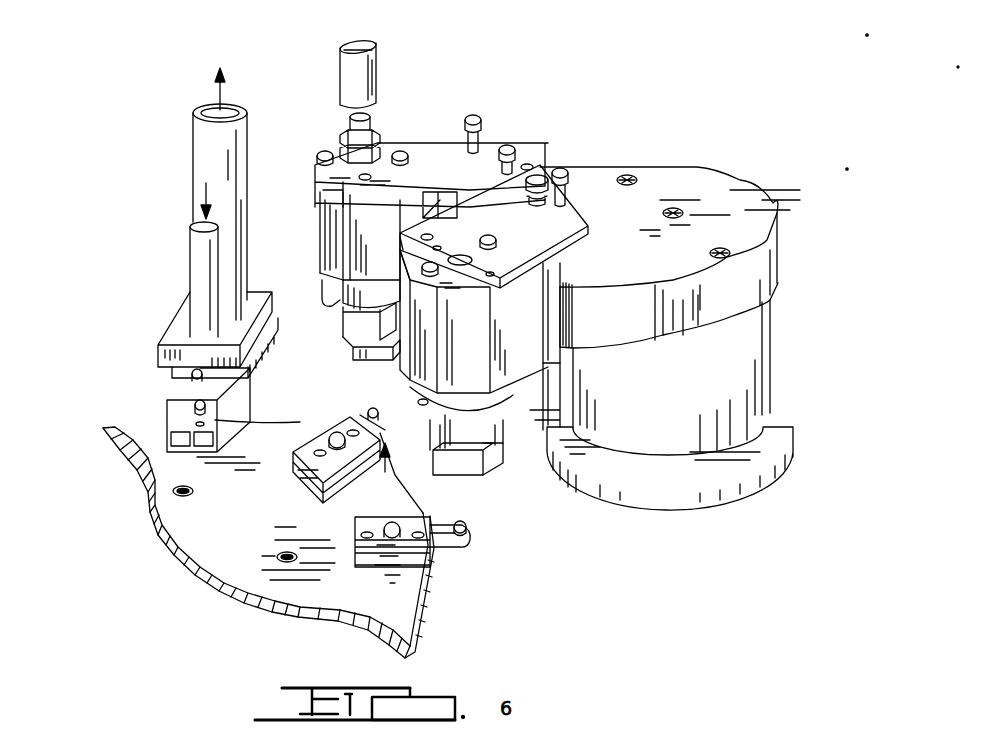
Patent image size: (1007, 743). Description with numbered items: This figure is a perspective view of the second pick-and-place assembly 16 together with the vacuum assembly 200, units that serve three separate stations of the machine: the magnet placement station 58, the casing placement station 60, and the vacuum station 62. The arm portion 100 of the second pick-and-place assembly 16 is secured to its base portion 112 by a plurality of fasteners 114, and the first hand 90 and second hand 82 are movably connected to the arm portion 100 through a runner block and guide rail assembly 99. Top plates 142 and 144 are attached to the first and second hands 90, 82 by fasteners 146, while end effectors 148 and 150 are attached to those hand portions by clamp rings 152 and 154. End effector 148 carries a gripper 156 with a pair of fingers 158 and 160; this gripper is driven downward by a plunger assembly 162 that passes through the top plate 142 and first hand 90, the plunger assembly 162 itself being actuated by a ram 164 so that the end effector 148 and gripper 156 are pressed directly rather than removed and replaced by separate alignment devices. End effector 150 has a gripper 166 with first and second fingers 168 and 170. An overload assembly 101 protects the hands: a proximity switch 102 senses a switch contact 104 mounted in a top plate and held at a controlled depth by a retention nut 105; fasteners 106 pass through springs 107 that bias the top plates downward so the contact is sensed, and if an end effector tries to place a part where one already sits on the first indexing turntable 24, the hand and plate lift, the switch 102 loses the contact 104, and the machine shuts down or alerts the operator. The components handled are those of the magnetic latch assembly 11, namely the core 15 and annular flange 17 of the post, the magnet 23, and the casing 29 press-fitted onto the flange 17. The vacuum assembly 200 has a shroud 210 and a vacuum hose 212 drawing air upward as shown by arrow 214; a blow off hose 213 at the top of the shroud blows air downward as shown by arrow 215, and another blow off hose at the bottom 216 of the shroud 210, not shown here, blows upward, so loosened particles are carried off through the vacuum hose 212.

The magnetic latch assembly 11 is at (176, 378).
The core 15 is at (467, 520).
The second pick-and-place assembly 16 is at (773, 350).
The annular flange 17 is at (467, 548).
The magnet 23 is at (473, 535).
The first indexing turntable 24 is at (250, 524).
The casing 29 is at (204, 376).
The magnet placement station 58 is at (452, 558).
The casing placement station 60 is at (392, 468).
The vacuum station 62 is at (232, 411).
The second hand 82 is at (513, 355).
The first hand 90 is at (318, 182).
The runner block and guide rail assembly 99 is at (338, 200).
The arm portion 100 is at (767, 267).
The overload assembly 101 is at (527, 164).
The proximity switch 102 is at (432, 201).
The switch contact 104 is at (517, 180).
The retention nut 105 is at (507, 144).
The fastener 106 is at (477, 116).
The spring 107 is at (468, 142).
The base portion 112 is at (750, 403).
The fastener 114 is at (721, 248).
The top plate 142 is at (461, 174).
The top plate 144 is at (546, 254).
The fastener 146 is at (322, 155).
The end effector 148 is at (331, 310).
The end effector 150 is at (580, 432).
The clamp ring 152 is at (320, 280).
The clamp ring 154 is at (418, 402).
The gripper 156 is at (360, 322).
The finger 158 is at (403, 357).
The finger 160 is at (358, 350).
The plunger assembly 162 is at (363, 118).
The ram 164 is at (347, 70).
The gripper 166 is at (447, 435).
The first finger 168 is at (500, 460).
The second finger 170 is at (457, 468).
The vacuum assembly 200 is at (175, 305).
The shroud 210 is at (160, 343).
The vacuum hose 212 is at (205, 147).
The blow off hose 213 is at (195, 252).
The arrow / top of shroud 214 is at (217, 90).
The arrow 215 is at (200, 193).
The bottom of shroud 216 is at (163, 410).